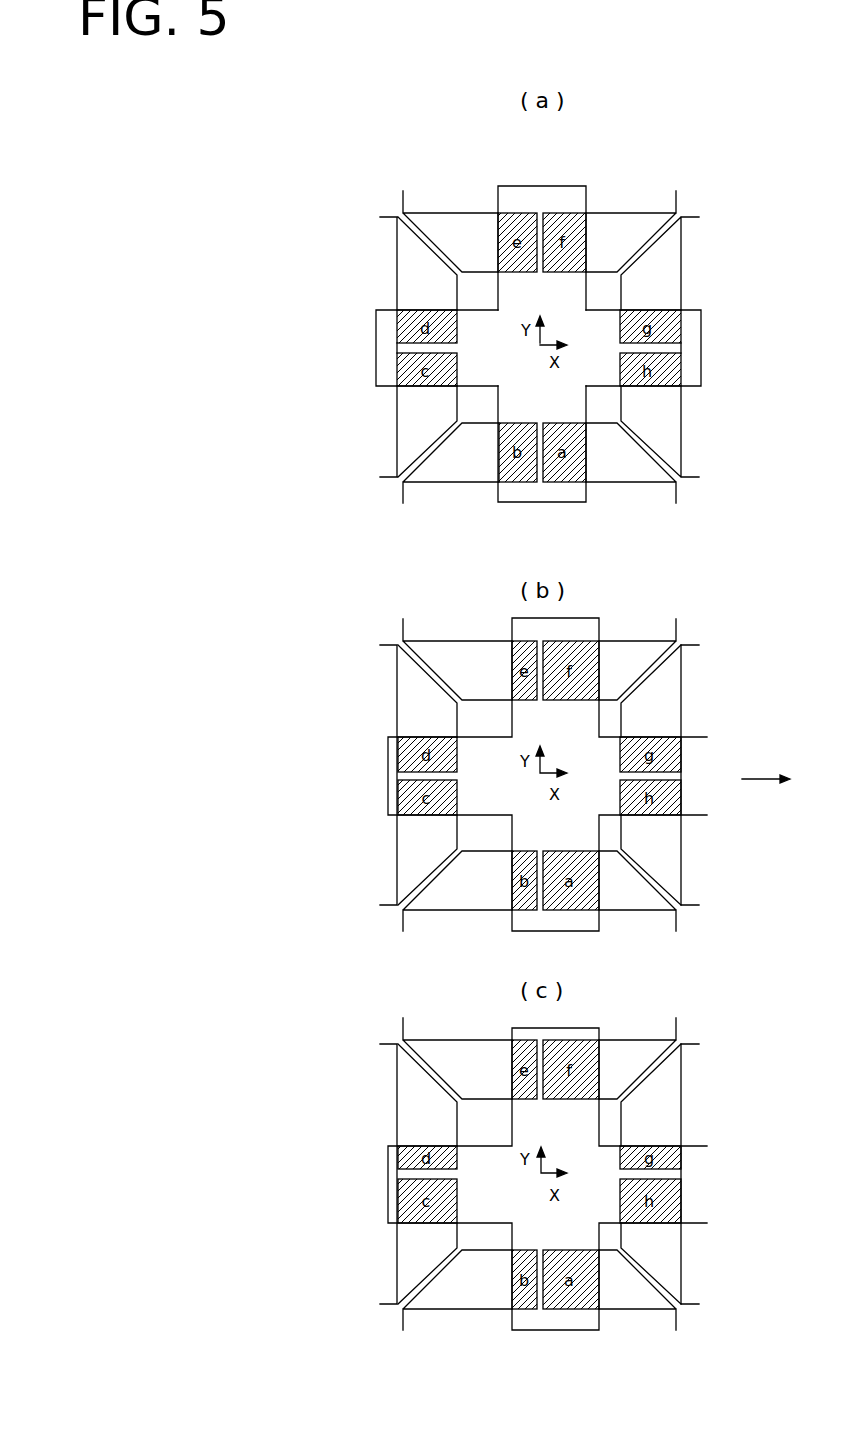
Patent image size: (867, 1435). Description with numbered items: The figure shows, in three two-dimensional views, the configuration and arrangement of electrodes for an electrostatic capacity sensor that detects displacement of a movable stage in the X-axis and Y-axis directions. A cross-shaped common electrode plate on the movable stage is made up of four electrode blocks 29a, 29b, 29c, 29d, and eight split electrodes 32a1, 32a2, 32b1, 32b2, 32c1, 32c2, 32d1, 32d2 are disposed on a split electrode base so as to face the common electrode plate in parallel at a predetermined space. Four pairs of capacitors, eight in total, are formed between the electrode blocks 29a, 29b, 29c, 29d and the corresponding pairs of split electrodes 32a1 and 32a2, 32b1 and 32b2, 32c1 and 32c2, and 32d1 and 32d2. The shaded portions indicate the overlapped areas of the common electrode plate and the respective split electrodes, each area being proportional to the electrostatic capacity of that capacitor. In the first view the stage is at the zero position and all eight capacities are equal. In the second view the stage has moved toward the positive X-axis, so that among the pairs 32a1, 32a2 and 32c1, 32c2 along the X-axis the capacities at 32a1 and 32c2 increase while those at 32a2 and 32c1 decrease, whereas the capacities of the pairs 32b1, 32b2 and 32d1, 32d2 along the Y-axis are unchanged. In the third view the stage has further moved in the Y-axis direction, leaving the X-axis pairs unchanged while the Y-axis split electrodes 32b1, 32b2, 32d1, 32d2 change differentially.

The electrode block 29a is at (552, 493).
The electrode block 29b is at (374, 341).
The electrode block 29c is at (547, 190).
The electrode block 29d is at (703, 347).
The split electrode 32a1 is at (630, 473).
The split electrode 32a2 is at (458, 468).
The split electrode 32b1 is at (403, 430).
The split electrode 32b2 is at (405, 266).
The split electrode 32c1 is at (442, 215).
The split electrode 32c2 is at (634, 211).
The split electrode 32d1 is at (680, 270).
The split electrode 32d2 is at (672, 423).